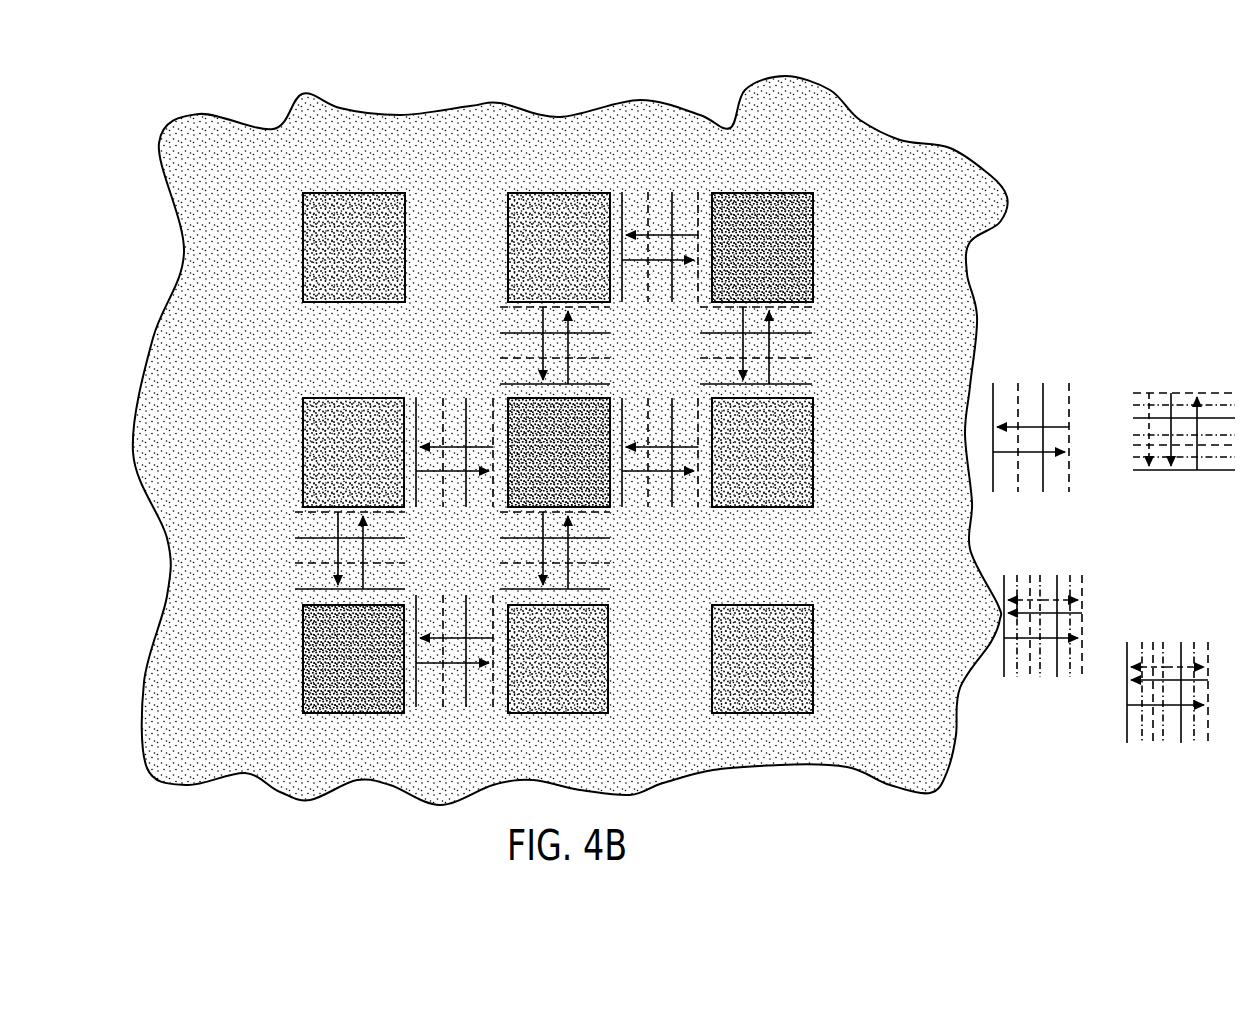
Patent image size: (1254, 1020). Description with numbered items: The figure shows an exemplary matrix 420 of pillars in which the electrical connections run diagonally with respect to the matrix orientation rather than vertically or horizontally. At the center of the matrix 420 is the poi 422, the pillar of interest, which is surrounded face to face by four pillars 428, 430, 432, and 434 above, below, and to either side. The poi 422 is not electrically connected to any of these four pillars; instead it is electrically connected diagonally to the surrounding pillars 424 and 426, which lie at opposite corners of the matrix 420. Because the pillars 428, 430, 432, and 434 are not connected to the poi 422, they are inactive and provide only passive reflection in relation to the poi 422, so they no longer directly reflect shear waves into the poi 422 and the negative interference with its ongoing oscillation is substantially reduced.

The matrix 420 is at (998, 120).
The poi 422 is at (512, 400).
The pillar 424 is at (762, 193).
The pillar 426 is at (303, 660).
The pillar 428 is at (558, 713).
The pillar 430 is at (813, 455).
The pillar 432 is at (558, 193).
The pillar 434 is at (303, 458).